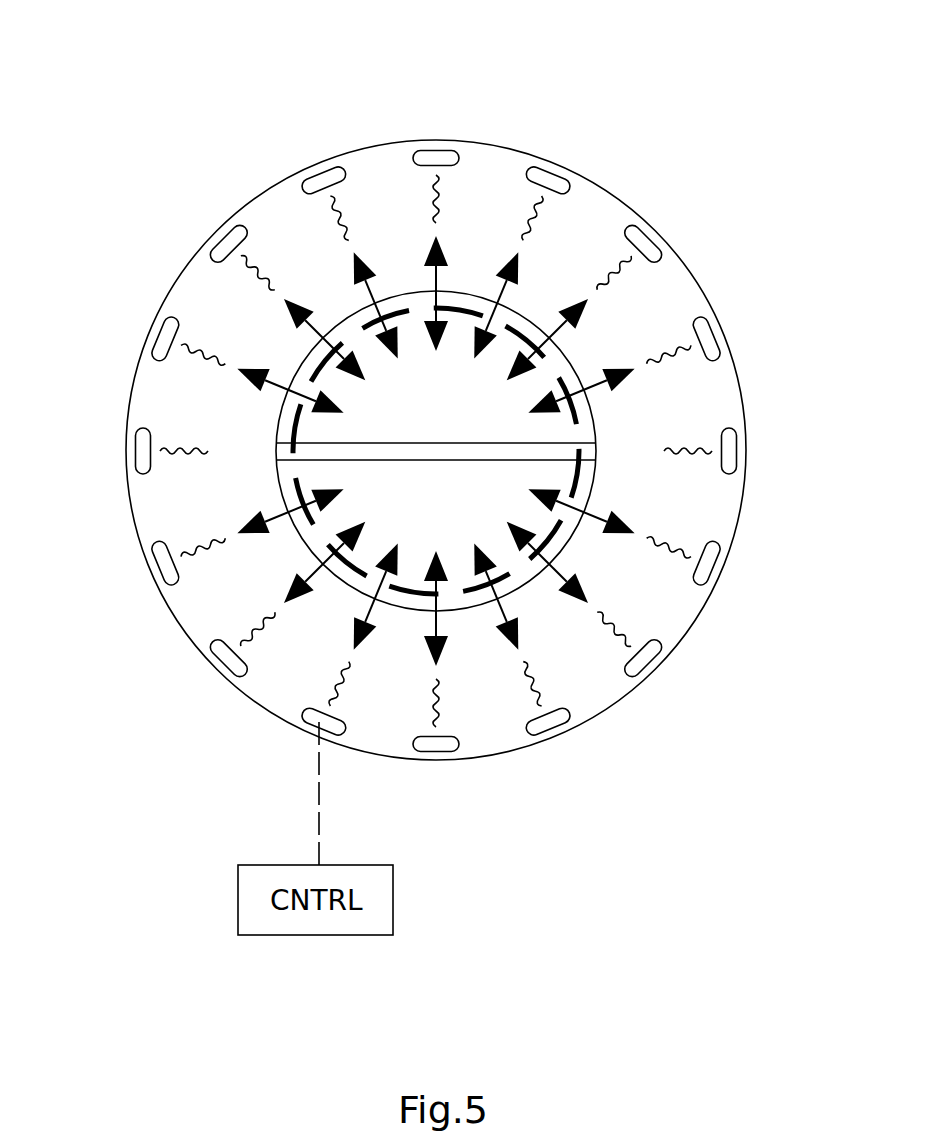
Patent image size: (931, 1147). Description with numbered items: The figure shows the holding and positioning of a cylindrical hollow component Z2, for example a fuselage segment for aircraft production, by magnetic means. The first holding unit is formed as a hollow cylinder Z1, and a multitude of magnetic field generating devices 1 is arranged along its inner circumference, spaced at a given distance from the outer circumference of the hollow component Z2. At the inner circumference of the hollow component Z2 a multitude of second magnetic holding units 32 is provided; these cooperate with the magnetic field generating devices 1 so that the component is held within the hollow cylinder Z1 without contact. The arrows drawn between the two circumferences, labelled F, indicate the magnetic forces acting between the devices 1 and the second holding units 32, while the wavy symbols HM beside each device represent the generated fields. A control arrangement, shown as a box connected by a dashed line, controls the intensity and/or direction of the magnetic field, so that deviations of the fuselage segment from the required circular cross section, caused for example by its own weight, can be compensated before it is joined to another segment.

The magnetic field generating device 1 is at (318, 173).
The hollow cylinder Z1 is at (427, 140).
The hollow component Z2 is at (592, 423).
The fluid flow F is at (500, 293).
The heating module HM is at (193, 415).
The second holding unit 32 is at (510, 580).